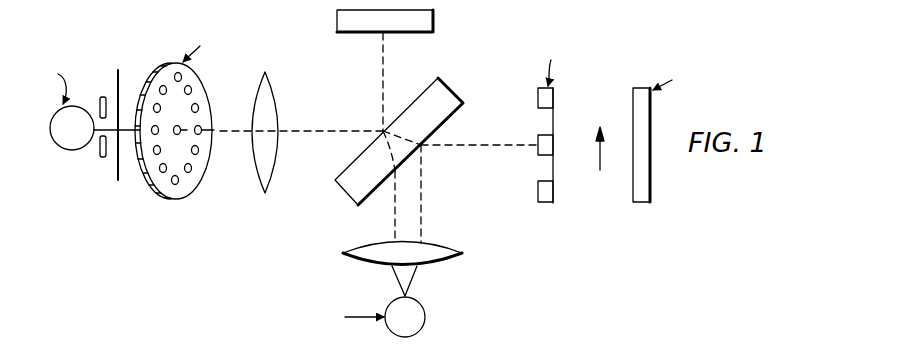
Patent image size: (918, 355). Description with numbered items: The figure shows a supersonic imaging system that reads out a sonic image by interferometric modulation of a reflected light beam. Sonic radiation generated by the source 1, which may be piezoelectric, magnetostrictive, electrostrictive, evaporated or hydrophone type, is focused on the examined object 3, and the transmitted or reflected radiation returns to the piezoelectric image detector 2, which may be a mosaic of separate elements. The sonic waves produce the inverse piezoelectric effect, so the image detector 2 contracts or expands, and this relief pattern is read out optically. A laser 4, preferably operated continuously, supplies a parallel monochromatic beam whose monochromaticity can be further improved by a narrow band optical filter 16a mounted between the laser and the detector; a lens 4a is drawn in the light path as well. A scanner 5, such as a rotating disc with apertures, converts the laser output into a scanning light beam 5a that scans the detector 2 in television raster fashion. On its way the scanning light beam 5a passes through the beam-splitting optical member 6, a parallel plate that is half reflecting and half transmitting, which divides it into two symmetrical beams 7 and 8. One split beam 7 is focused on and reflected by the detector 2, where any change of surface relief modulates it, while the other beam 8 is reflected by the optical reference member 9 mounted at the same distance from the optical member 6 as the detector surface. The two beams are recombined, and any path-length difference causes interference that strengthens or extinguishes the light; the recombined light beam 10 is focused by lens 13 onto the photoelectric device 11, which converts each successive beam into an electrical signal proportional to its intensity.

The source of sonic radiation 1 is at (640, 203).
The piezoelectric image detector 2 is at (553, 203).
The examined object 3 is at (600, 160).
The laser 4 is at (67, 147).
The lens 4a is at (263, 188).
The scanner 5 is at (173, 198).
The scanning light beam 5a is at (320, 140).
The beam-splitting optical member 6 is at (418, 94).
The split scanning beam 7 is at (421, 205).
The reference beam 8 is at (383, 81).
The optical reference member 9 is at (434, 22).
The recombined light beam 10 is at (417, 280).
The photoelectric device 11 is at (425, 315).
The lens 13 is at (462, 253).
The narrow band optical filter 16a is at (117, 181).